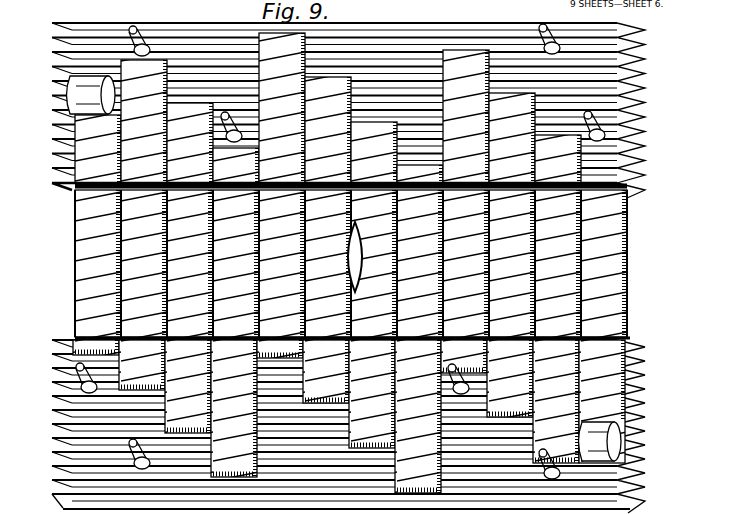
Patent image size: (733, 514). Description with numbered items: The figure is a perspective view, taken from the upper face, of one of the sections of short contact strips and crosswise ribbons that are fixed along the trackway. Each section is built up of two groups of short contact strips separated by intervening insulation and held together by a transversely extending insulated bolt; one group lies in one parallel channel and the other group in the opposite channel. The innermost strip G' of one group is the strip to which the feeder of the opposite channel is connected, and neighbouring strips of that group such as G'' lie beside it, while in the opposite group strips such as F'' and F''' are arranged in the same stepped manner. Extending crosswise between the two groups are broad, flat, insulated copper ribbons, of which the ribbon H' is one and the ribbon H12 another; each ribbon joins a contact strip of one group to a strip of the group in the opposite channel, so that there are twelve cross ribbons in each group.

The upper slatted frame section G'' is at (372, 103).
The contact strip G' is at (368, 199).
The copper ribbon H' is at (374, 262).
The band carrier column H12 is at (78, 266).
The lower slatted frame section F'' is at (367, 424).
The lower frame slat F''' is at (374, 501).